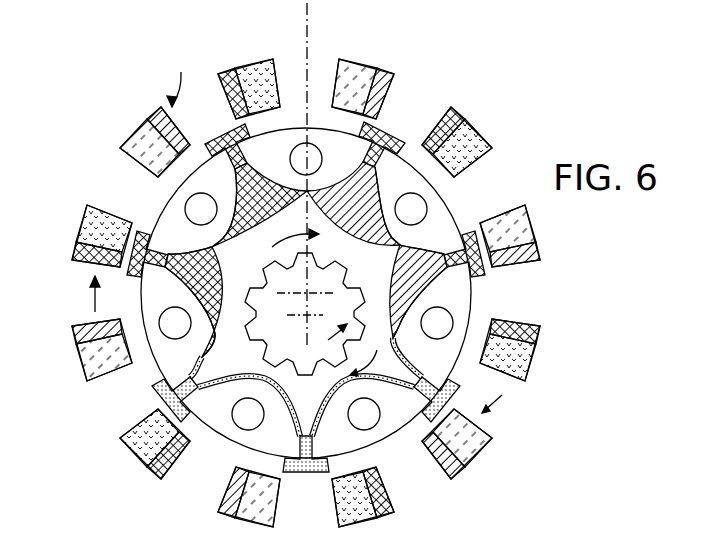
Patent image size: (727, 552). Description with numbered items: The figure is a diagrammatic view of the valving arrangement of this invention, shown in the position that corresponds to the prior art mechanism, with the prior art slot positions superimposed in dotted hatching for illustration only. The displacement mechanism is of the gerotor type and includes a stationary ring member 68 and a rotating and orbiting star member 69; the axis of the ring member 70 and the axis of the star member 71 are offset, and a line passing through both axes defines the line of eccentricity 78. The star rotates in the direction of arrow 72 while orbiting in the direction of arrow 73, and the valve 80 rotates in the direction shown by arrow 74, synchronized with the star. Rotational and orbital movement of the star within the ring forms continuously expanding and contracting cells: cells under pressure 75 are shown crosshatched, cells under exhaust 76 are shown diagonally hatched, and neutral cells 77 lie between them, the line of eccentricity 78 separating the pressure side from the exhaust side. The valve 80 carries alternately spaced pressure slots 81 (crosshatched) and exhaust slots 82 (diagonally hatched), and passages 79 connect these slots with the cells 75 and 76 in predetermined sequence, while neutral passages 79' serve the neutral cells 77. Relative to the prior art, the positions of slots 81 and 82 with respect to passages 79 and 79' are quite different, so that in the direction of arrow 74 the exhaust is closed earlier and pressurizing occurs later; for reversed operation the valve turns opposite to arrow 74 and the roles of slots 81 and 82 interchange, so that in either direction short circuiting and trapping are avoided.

The stationary ring member 68 is at (434, 201).
The star member 69 is at (224, 361).
The axis of the ring member 70 is at (309, 291).
The axis of the star member 71 is at (303, 322).
The arrow indicating direction of star rotation 72 is at (323, 302).
The arrow indicating direction of star orbit 73 is at (325, 339).
The arrow indicating direction of valve rotation 74 is at (507, 404).
The cells under pressure 75 is at (268, 176).
The cells under exhaust 76 is at (376, 192).
The neutral cells 77 is at (413, 373).
The line of eccentricity 78 is at (309, 31).
The passages 79 is at (306, 211).
The neutral passages 79' is at (306, 424).
The valve 80 is at (178, 78).
The pressure slots 81 is at (228, 68).
The exhaust slots 82 is at (163, 113).